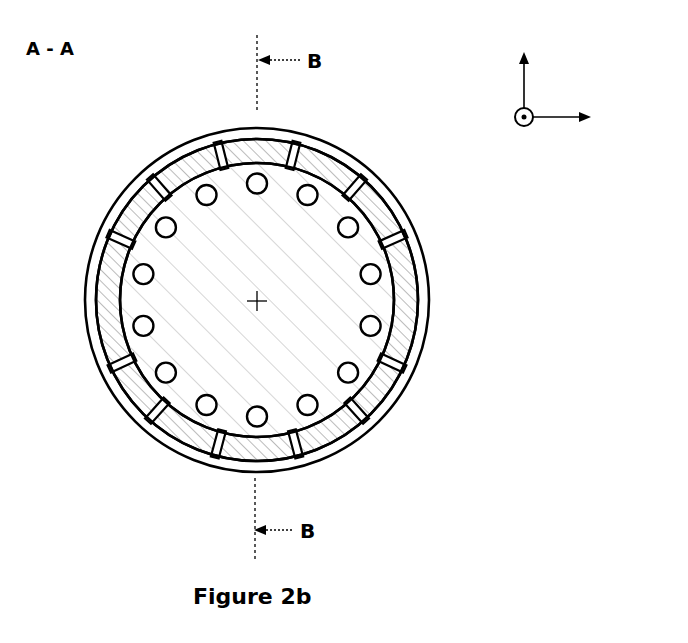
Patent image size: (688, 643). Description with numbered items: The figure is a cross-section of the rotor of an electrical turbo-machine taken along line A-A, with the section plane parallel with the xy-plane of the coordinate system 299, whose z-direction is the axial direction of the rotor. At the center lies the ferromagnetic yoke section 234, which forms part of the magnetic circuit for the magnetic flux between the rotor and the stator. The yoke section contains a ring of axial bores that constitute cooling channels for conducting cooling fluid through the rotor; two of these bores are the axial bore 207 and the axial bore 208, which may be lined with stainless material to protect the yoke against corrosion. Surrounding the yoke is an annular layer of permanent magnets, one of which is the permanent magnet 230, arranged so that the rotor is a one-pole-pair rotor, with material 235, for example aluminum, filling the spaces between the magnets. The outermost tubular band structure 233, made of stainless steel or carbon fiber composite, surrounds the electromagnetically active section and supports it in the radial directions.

The axial bore 207 is at (258, 197).
The axial bore 208 is at (258, 406).
The permanent magnet 230 is at (247, 145).
The tubular band structure 233 is at (148, 172).
The ferromagnetic yoke section 234 is at (218, 302).
The material between the permanent magnets 235 is at (403, 287).
The coordinate system 299 is at (581, 92).